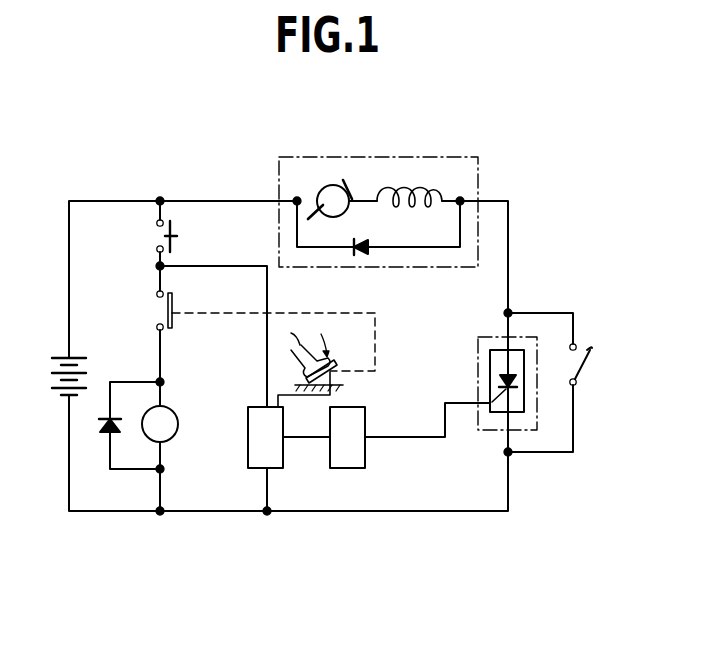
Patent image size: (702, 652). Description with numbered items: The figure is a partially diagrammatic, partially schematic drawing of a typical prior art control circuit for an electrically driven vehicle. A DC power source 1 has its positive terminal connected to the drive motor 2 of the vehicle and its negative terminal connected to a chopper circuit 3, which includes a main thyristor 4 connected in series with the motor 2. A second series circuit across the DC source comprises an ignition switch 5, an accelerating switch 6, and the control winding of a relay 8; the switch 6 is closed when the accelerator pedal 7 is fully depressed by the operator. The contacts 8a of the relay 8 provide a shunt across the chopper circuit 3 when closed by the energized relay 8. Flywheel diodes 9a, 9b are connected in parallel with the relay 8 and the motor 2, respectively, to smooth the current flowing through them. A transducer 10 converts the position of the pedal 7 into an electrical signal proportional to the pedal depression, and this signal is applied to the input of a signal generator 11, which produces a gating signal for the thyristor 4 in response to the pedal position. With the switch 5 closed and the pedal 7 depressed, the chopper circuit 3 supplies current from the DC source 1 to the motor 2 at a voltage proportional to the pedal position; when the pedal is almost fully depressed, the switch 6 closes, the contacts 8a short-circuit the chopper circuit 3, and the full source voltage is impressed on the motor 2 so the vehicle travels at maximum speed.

The DC power source 1 is at (50, 364).
The drive motor 2 is at (420, 157).
The chopper circuit 3 is at (497, 430).
The main thyristor 4 is at (497, 380).
The ignition switch 5 is at (156, 224).
The accelerating switch 6 is at (156, 310).
The accelerator pedal 7 is at (317, 353).
The relay 8 is at (165, 438).
The relay contacts 8a is at (580, 370).
The flywheel diode 9a is at (110, 433).
The flywheel diode 9b is at (358, 258).
The transducer 10 is at (248, 436).
The signal generator 11 is at (344, 468).